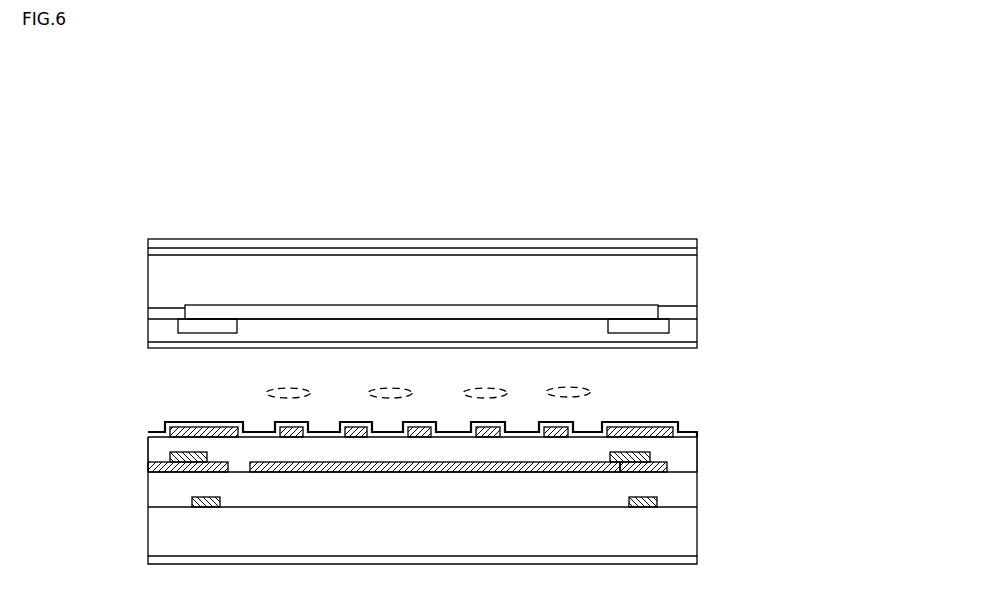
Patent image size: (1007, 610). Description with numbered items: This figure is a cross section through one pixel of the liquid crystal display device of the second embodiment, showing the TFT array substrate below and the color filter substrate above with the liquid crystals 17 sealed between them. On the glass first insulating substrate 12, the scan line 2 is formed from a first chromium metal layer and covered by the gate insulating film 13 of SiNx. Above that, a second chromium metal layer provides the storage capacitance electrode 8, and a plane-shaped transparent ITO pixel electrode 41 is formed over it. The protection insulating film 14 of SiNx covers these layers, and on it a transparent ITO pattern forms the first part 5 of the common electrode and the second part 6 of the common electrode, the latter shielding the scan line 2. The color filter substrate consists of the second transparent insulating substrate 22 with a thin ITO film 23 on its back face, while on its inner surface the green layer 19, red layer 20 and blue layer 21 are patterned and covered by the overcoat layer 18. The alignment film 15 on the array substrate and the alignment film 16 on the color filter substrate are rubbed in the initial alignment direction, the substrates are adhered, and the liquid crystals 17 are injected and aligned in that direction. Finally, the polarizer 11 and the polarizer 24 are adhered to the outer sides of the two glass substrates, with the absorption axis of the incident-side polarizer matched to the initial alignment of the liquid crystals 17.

The scan line 2 is at (203, 508).
The first part of the common electrode 5 is at (290, 427).
The second part of the common electrode 6 is at (207, 427).
The storage capacitance electrode 8 is at (188, 475).
The polarizer 11 is at (497, 562).
The first insulating substrate 12 is at (675, 533).
The gate insulating film 13 is at (683, 492).
The protection insulating film 14 is at (685, 450).
The alignment film 15 is at (153, 433).
The alignment film 16 is at (170, 350).
The liquid crystals 17 is at (580, 387).
The overcoat layer 18 is at (690, 331).
The green layer 19 is at (335, 313).
The red layer 20 is at (165, 310).
The blue layer 21 is at (678, 307).
The second transparent insulating substrate 22 is at (428, 277).
The ITO film 23 is at (582, 248).
The polarizer 24 is at (518, 243).
The pixel electrode 41 is at (467, 470).